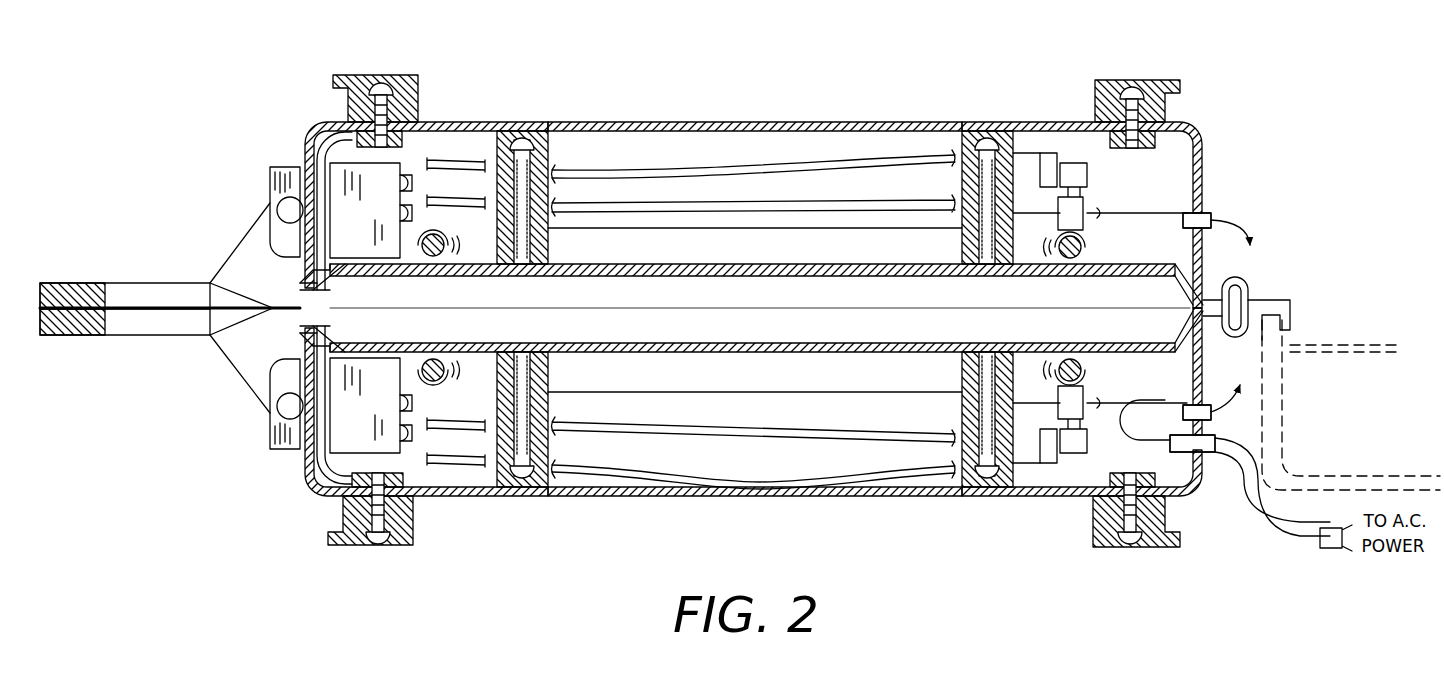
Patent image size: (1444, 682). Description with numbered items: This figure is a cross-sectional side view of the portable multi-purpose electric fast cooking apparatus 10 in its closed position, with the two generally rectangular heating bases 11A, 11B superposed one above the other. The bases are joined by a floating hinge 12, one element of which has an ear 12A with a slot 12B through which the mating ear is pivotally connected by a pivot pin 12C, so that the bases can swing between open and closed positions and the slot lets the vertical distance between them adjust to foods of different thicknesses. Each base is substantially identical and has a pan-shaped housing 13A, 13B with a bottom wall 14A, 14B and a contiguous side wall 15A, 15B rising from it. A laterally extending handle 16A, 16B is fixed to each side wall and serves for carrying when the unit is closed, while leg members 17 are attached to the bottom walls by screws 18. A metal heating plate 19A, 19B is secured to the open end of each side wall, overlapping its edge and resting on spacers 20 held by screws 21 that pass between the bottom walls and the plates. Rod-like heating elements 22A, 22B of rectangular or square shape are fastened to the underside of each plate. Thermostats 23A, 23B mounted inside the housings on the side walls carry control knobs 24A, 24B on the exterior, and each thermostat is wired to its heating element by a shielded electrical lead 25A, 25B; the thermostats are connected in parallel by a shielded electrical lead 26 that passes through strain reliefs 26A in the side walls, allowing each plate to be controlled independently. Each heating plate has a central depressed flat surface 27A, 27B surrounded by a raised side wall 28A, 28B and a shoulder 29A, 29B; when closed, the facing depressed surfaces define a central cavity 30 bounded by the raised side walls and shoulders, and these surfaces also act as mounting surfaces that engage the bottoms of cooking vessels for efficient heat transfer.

The portable multi-purpose electric fast cooking apparatus 10 is at (949, 82).
The heating base 11A is at (671, 499).
The heating base 11B is at (627, 119).
The floating hinge 12 is at (1252, 282).
The ear 12A is at (1250, 298).
The slot 12B is at (1255, 311).
The pivot pin 12C is at (1283, 356).
The pan-shaped housing 13A is at (815, 497).
The pan-shaped housing 13B is at (745, 121).
The bottom wall 14A is at (905, 497).
The bottom wall 14B is at (858, 121).
The side wall 15A is at (320, 460).
The side wall 15B is at (313, 162).
The handle 16A is at (135, 336).
The handle 16B is at (135, 281).
The leg members 17 is at (418, 96).
The screws 18 is at (381, 86).
The metal heating plate 19A is at (640, 353).
The metal heating plate 19B is at (592, 263).
The spacers 20 is at (552, 188).
The screws 21 is at (522, 140).
The heating element 22A is at (433, 357).
The heating element 22B is at (433, 258).
The thermostat 23A is at (382, 417).
The thermostat 23B is at (382, 222).
The control knob 24A is at (270, 396).
The control knob 24B is at (270, 182).
The shielded electrical lead 25A is at (715, 468).
The shielded electrical lead 25B is at (705, 169).
The shielded electrical lead 26 is at (746, 200).
The strain reliefs 26A is at (1211, 218).
The depressed flat surface 27A is at (775, 342).
The depressed flat surface 27B is at (775, 277).
The raised side wall 28A is at (335, 327).
The raised side wall 28B is at (335, 291).
The shoulder 29A is at (300, 318).
The shoulder 29B is at (300, 283).
The central cavity 30 is at (618, 321).